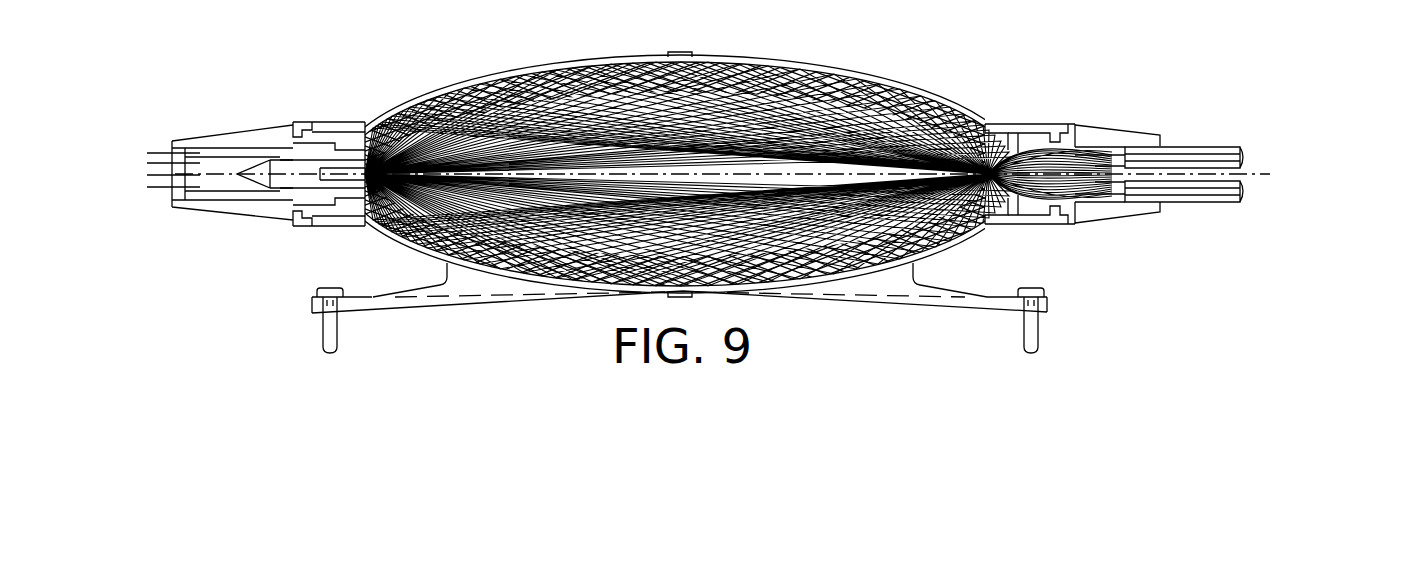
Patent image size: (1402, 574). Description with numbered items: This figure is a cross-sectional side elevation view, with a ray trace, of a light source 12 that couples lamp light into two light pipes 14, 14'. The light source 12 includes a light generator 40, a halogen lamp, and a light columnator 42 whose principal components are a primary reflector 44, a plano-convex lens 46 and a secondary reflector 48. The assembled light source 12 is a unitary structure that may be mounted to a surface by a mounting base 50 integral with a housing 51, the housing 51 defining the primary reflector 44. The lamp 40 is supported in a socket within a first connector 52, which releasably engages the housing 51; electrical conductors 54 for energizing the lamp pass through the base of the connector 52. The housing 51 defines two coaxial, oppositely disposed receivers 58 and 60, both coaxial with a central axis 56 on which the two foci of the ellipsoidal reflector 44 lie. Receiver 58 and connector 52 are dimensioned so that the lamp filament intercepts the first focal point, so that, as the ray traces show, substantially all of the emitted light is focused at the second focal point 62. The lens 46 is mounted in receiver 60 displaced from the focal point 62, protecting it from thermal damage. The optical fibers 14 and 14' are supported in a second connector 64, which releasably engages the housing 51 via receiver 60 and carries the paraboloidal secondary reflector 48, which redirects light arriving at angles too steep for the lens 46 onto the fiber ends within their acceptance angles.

The light source 12 is at (832, 54).
The light pipe 14 is at (1224, 208).
The light pipe 14' is at (1227, 130).
The light generator 40 is at (330, 193).
The light columnator 42 is at (487, 68).
The primary reflector 44 is at (730, 78).
The plano-convex lens 46 is at (1007, 123).
The secondary reflector 48 is at (1083, 147).
The mounting base 50 is at (913, 308).
The housing 51 is at (970, 250).
The first connector 52 is at (233, 127).
The electrical conductors 54 is at (148, 192).
The central axis 56 is at (640, 78).
The receiver 58 is at (333, 122).
The receiver 60 is at (1040, 123).
The second focal point 62 is at (982, 120).
The second connector 64 is at (1123, 215).